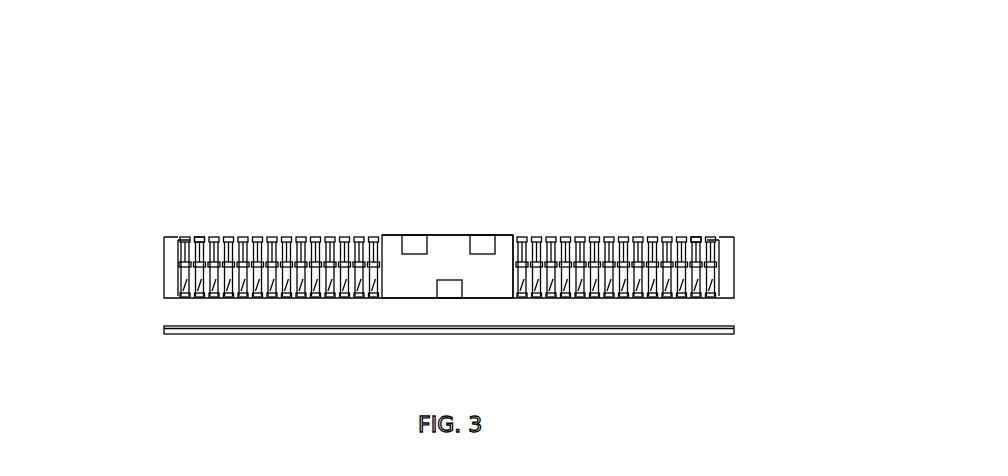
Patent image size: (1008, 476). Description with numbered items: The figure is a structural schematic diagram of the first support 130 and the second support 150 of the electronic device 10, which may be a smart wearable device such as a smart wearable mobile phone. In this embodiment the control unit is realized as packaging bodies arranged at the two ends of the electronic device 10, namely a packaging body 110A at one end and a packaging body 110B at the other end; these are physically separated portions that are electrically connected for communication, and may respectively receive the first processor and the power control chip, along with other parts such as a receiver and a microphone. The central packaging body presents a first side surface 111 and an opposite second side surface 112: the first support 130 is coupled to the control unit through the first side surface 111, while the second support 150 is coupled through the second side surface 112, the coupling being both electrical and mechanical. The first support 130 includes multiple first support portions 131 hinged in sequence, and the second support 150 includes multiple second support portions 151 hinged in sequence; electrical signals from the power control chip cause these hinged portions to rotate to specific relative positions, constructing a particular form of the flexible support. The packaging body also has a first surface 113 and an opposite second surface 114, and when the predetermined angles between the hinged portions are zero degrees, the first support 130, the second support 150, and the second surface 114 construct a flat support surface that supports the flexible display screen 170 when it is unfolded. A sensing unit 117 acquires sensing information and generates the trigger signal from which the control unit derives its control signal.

The electronic device 10 is at (490, 45).
The packaging body 110A is at (175, 272).
The packaging body 110B is at (735, 268).
The first side surface 111 is at (380, 257).
The second side surface 112 is at (520, 266).
The first surface 113 is at (402, 226).
The second surface 114 is at (484, 307).
The sensing unit 117 is at (412, 245).
The first support 130 is at (248, 237).
The first support portions 131 is at (203, 238).
The second support 150 is at (653, 235).
The second support portions 151 is at (695, 235).
The flexible display screen 170 is at (720, 332).